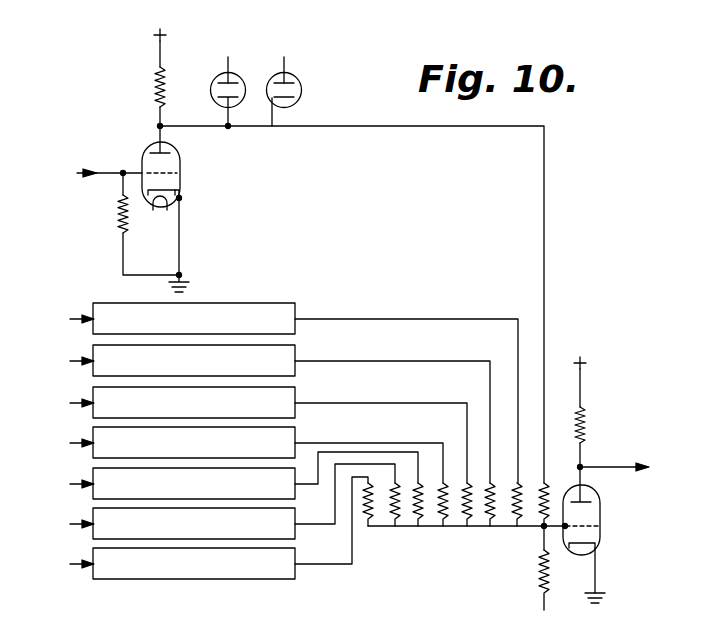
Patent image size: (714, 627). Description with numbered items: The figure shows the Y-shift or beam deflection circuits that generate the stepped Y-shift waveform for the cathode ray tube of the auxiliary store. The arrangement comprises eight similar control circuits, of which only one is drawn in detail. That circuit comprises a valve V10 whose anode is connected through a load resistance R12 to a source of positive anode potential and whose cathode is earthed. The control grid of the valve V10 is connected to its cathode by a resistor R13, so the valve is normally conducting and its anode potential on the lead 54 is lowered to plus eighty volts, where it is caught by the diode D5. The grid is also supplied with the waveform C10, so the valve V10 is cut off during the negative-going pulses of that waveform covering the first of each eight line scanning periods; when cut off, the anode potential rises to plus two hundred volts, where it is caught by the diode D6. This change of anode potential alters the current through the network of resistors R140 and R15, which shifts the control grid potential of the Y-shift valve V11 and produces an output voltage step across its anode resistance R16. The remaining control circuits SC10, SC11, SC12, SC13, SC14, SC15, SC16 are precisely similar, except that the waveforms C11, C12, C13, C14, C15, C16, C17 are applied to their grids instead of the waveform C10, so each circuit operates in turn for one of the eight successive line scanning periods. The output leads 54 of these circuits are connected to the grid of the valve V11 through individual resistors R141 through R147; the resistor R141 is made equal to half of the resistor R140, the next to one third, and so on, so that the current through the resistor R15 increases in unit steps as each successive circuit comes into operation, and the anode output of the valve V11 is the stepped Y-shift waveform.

The lead 54 is at (384, 127).
The load resistance R12 is at (138, 77).
The resistor R13 is at (127, 224).
The resistor R15 is at (561, 568).
The anode resistance R16 is at (619, 427).
The resistor R140 is at (539, 507).
The resistor R141 is at (512, 502).
The resistor R147 is at (367, 508).
The diode D5 is at (298, 80).
The diode D6 is at (211, 88).
The valve V10 is at (152, 209).
The Y-shift valve V11 is at (601, 535).
The waveform C10 is at (93, 161).
The waveform C11 is at (59, 319).
The waveform C12 is at (59, 361).
The waveform C13 is at (59, 403).
The waveform C14 is at (59, 443).
The waveform C15 is at (59, 484).
The waveform C16 is at (59, 524).
The waveform C17 is at (59, 564).
The control circuit SC10 is at (305, 393).
The control circuit SC11 is at (291, 414).
The control circuit SC12 is at (280, 435).
The control circuit SC13 is at (268, 455).
The control circuit SC14 is at (255, 475).
The control circuit SC15 is at (244, 501).
The control circuit SC16 is at (230, 528).